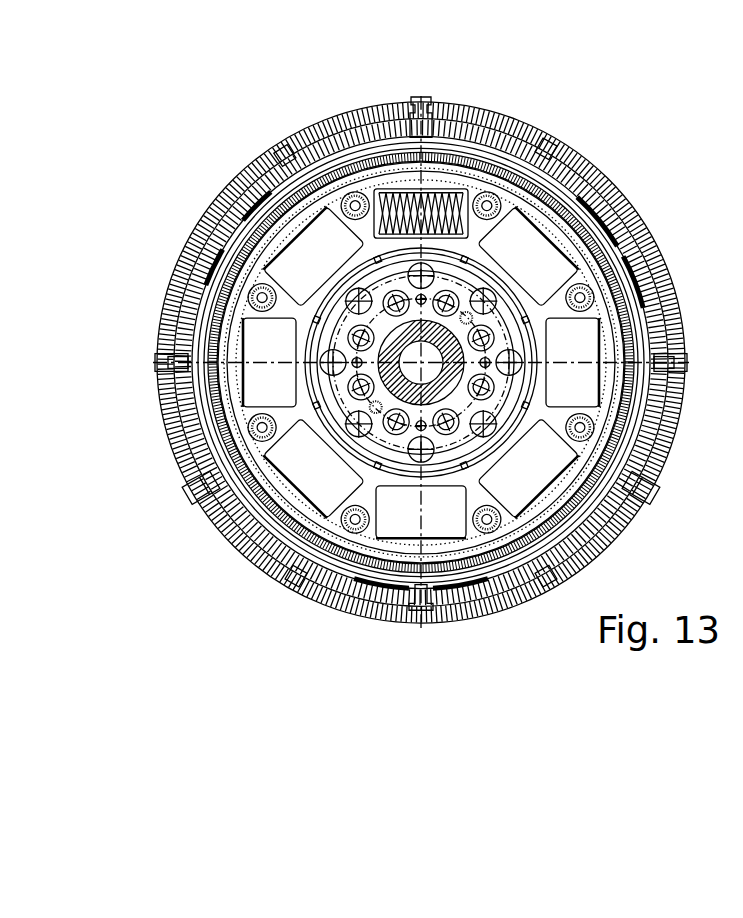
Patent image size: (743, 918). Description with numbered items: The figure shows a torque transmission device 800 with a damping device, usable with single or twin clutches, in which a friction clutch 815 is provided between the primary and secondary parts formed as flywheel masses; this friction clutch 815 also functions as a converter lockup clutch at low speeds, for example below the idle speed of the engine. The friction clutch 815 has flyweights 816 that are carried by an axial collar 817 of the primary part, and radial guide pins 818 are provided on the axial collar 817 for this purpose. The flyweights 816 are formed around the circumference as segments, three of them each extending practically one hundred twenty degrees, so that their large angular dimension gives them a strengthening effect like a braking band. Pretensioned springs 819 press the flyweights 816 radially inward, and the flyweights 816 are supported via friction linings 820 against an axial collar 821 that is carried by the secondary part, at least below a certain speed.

The motor assembly 800 is at (490, 82).
The friction clutch 815 is at (520, 128).
The flyweights 816 is at (360, 125).
The axial collar 817 is at (272, 147).
The radial guide pins 818 is at (428, 98).
The springs 819 is at (247, 190).
The friction linings 820 is at (225, 243).
The axial collar 821 is at (220, 254).